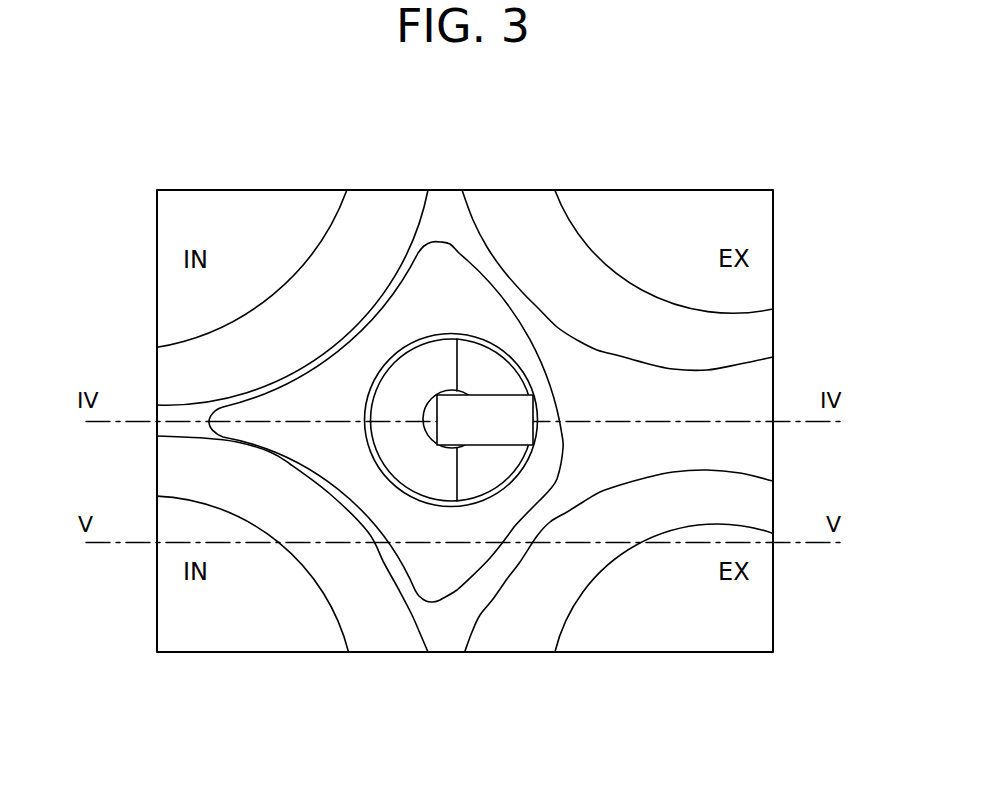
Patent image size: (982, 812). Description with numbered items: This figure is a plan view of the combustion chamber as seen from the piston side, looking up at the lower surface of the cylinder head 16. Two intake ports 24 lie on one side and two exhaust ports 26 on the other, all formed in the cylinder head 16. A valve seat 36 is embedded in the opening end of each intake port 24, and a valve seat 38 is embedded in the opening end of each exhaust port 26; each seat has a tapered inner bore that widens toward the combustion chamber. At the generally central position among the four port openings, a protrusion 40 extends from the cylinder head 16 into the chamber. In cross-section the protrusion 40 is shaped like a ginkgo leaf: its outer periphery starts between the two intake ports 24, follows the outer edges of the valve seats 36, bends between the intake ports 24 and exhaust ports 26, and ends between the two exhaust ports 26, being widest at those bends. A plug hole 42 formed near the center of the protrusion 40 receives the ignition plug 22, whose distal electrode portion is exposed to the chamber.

The cylinder head 16 is at (722, 692).
The ignition plug 22 is at (414, 373).
The intake ports 24 is at (258, 236).
The exhaust ports 26 is at (608, 220).
The valve seat 36 is at (365, 222).
The valve seat 38 is at (520, 220).
The protrusion 40 is at (477, 523).
The plug hole 42 is at (427, 503).